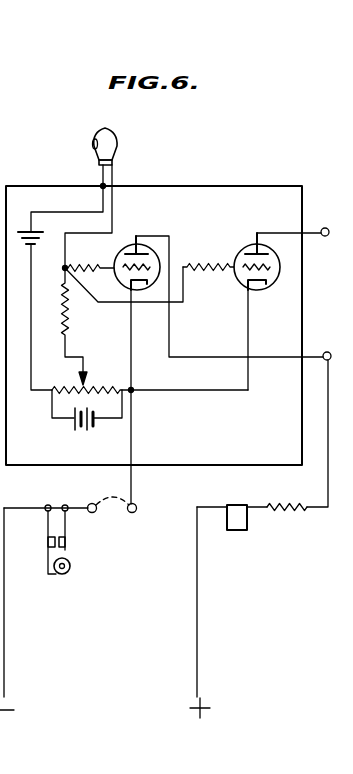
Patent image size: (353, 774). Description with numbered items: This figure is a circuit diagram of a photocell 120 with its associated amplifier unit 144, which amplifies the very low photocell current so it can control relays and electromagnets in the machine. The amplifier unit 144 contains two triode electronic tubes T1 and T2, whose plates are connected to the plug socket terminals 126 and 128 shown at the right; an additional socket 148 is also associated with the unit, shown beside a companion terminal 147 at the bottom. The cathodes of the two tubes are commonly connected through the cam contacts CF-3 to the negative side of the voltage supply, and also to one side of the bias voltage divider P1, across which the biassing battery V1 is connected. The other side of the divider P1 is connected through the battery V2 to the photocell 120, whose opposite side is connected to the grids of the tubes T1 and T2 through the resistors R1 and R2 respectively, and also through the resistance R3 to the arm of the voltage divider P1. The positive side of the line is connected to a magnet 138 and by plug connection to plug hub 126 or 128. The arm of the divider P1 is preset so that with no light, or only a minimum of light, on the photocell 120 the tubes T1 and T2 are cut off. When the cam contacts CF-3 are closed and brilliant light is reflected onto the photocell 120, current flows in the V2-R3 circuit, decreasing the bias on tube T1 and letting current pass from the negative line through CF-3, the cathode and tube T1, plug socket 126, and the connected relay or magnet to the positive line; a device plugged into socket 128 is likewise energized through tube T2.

The photocell 120 is at (115, 140).
The amplifier unit 144 is at (230, 197).
The plug socket terminal 128 is at (323, 228).
The plug socket terminal 126 is at (325, 352).
The switch terminal 147 is at (83, 506).
The additional socket 148 is at (137, 503).
The magnet 138 is at (236, 512).
The battery V2 is at (22, 228).
The triode electronic tube T1 is at (150, 253).
The triode electronic tube T2 is at (240, 246).
The resistor R1 is at (100, 264).
The resistor R2 is at (200, 272).
The resistance R3 is at (70, 320).
The bias voltage divider P1 is at (117, 381).
The biassing battery V1 is at (78, 422).
The cam contacts CF-3 is at (66, 533).